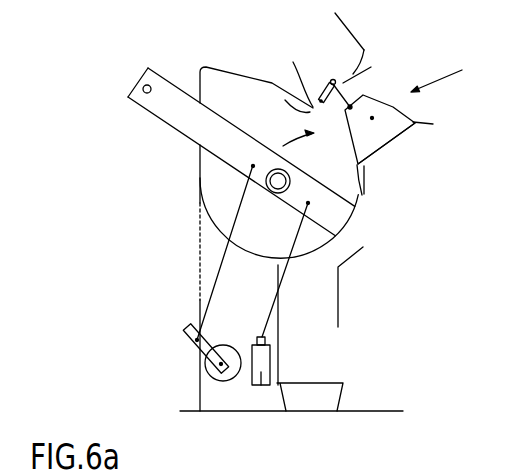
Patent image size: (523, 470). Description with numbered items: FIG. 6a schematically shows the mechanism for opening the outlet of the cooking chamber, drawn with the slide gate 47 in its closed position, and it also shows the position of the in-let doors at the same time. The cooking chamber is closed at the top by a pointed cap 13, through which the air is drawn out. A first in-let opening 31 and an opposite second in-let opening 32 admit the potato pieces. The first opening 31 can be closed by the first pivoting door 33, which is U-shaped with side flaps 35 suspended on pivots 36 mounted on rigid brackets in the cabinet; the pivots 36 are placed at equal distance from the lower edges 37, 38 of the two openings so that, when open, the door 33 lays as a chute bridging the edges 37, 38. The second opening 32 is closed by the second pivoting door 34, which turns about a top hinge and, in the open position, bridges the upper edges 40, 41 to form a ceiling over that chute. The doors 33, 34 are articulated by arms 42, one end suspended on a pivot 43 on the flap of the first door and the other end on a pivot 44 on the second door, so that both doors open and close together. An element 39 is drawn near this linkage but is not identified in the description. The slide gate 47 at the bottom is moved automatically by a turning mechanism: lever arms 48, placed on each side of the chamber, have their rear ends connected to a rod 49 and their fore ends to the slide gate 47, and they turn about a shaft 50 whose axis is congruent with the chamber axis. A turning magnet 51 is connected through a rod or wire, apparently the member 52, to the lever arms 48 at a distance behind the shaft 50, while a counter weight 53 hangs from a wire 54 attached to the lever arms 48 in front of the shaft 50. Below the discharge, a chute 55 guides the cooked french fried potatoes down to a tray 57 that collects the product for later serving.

The pointed cap 13 is at (236, 75).
The first in-let opening 31 is at (444, 71).
The second in-let opening 32 is at (286, 130).
The first pivoting door 33 is at (415, 133).
The second pivoting door 34 is at (377, 33).
The side flaps 35 is at (393, 118).
The pivots 36 is at (373, 112).
The lower edge of in-let opening 37 is at (362, 196).
The lower edge of in-let opening 38 is at (420, 130).
The hook 39 is at (290, 76).
The upper edge of in-let opening 40 is at (373, 62).
The upper edge of in-let opening 41 is at (284, 100).
The arms 42 is at (347, 80).
The pivot 43 is at (346, 112).
The pivot 44 is at (320, 80).
The slide gate 47 is at (347, 225).
The lever arms 48 is at (178, 130).
The rod 49 is at (143, 94).
The shaft 50 is at (275, 192).
The turning magnet 51 is at (210, 368).
The rod 52 is at (215, 280).
The counter weight 53 is at (260, 376).
The wire 54 is at (287, 262).
The chute 55 is at (323, 315).
The tray 57 is at (310, 339).